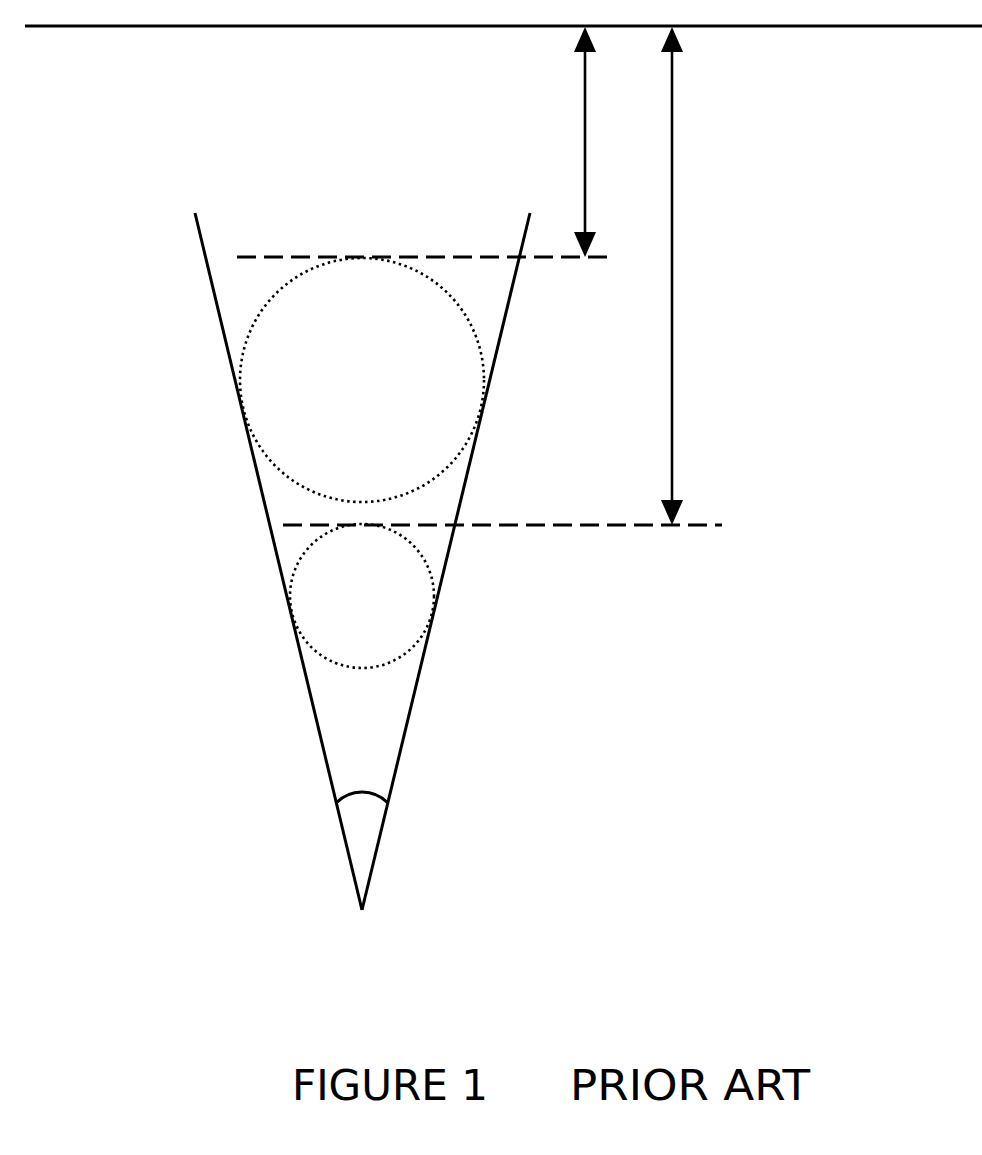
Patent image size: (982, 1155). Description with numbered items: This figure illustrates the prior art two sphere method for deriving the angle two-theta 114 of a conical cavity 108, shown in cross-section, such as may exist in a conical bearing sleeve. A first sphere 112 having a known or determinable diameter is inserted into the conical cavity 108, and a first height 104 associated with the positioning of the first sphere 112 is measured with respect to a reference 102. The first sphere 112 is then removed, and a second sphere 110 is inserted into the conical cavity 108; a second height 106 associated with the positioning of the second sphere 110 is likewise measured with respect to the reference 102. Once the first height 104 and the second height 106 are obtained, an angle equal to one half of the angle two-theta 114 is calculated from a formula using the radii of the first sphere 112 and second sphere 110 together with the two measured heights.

The reference 102 is at (130, 27).
The first height 104 is at (585, 82).
The second height 106 is at (673, 214).
The conical cavity 108 is at (332, 198).
The second sphere 110 is at (430, 625).
The first sphere 112 is at (480, 422).
The angle 2θ 114 is at (385, 793).